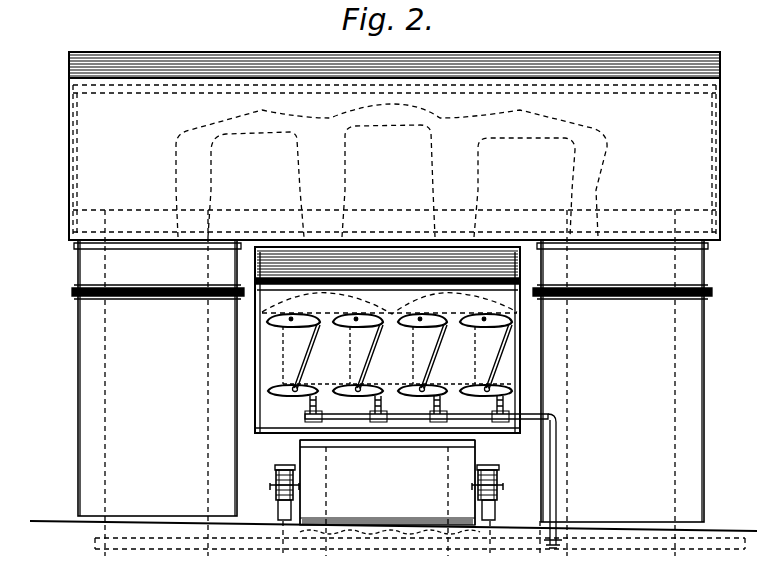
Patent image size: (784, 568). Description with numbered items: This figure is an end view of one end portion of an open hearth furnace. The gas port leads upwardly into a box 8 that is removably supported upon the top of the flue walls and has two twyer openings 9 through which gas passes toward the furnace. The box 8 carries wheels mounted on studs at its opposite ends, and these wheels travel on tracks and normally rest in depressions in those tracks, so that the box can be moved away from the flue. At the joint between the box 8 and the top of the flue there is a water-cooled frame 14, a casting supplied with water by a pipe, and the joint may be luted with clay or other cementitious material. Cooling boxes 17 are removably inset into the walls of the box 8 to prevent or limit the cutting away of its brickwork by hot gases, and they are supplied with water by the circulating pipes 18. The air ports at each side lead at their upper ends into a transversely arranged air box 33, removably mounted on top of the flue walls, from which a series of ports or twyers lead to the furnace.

The box 8 is at (387, 340).
The twyer openings 9 is at (285, 338).
The water-cooled frame 14 is at (368, 530).
The cooling boxes 17 is at (478, 392).
The circulating pipes 18 is at (365, 384).
The air box 33 is at (394, 146).